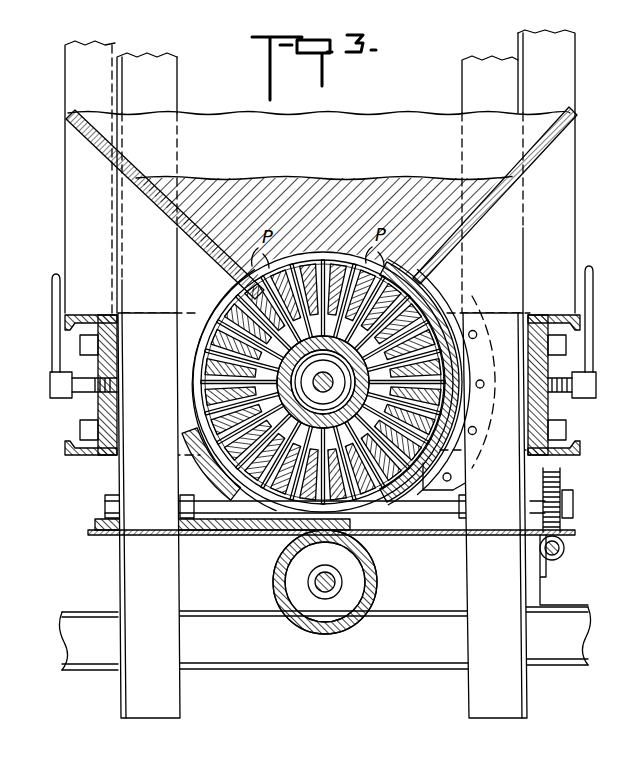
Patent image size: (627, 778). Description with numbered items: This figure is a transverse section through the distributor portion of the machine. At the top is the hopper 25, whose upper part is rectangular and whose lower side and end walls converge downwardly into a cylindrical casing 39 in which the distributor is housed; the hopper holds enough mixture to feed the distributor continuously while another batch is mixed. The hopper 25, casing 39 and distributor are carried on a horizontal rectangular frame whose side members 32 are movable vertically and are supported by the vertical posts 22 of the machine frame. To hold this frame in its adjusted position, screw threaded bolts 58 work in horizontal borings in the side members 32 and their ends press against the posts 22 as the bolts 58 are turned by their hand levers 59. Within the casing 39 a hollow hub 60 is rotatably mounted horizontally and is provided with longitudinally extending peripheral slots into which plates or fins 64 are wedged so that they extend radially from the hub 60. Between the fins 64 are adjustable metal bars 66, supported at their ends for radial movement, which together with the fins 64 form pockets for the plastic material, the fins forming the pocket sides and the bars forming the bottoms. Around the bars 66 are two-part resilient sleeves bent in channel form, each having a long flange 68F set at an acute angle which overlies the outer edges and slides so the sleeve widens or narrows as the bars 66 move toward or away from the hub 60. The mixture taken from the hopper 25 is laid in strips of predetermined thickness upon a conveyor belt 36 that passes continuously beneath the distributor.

The vertical posts 22 is at (165, 88).
The hopper 25 is at (424, 106).
The cylindrical casing 39 is at (218, 312).
The plates or fins 64 is at (200, 362).
The metal bars 66 is at (182, 413).
The long flange 68F is at (205, 448).
The side members 32 is at (97, 408).
The screw threaded bolts 58 is at (80, 397).
The hand levers 59 is at (50, 297).
The hollow hub 60 is at (262, 502).
The conveyor belt 36 is at (260, 535).